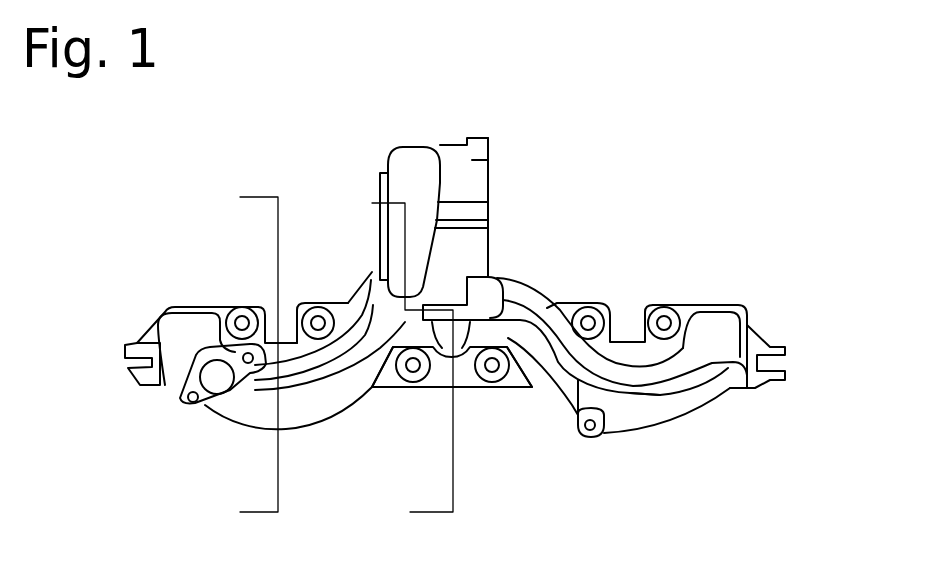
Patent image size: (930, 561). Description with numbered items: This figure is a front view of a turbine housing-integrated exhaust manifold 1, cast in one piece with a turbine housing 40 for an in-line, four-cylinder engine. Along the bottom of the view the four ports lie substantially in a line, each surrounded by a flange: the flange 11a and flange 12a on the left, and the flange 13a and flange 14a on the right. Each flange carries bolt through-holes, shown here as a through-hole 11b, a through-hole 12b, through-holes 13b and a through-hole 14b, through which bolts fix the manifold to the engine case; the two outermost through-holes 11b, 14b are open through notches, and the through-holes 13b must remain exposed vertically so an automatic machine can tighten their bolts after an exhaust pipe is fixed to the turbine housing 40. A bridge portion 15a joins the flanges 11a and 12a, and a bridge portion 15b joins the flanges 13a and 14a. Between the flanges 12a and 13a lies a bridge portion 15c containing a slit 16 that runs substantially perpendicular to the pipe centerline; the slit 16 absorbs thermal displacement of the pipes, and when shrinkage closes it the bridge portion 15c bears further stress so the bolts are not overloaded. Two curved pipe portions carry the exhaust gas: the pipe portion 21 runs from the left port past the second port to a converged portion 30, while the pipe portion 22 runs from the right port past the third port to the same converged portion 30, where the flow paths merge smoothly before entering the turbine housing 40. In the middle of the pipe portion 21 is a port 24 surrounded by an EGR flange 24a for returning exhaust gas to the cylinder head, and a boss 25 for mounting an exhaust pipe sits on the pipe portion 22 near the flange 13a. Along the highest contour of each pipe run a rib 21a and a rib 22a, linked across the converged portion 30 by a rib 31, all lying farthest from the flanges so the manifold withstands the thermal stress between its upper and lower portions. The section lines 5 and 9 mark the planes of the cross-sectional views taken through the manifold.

The turbine housing-integrated exhaust manifold 1 is at (713, 197).
The section line 5 is at (236, 197).
The section line 9 is at (368, 203).
The turbine housing 40 is at (467, 172).
The rib 31 is at (496, 282).
The flange 11a is at (222, 307).
The through-hole 11b is at (244, 320).
The bridge portion 15a is at (286, 345).
The through-hole 12b is at (318, 322).
The pipe portion 21 is at (310, 412).
The rib 21a is at (263, 392).
The port 24 is at (218, 382).
The EGR flange 24a is at (193, 402).
The converged portion 30 is at (445, 330).
The flange 12a is at (382, 390).
The slit 16 is at (452, 405).
The bridge portion 15c is at (474, 390).
The through-hole 13b is at (588, 322).
The flange 13a is at (525, 390).
The bridge portion 15b is at (620, 342).
The flange 14a is at (690, 305).
The through-hole 14b is at (664, 322).
The pipe portion 22 is at (673, 405).
The rib 22a is at (633, 395).
The boss 25 is at (591, 438).